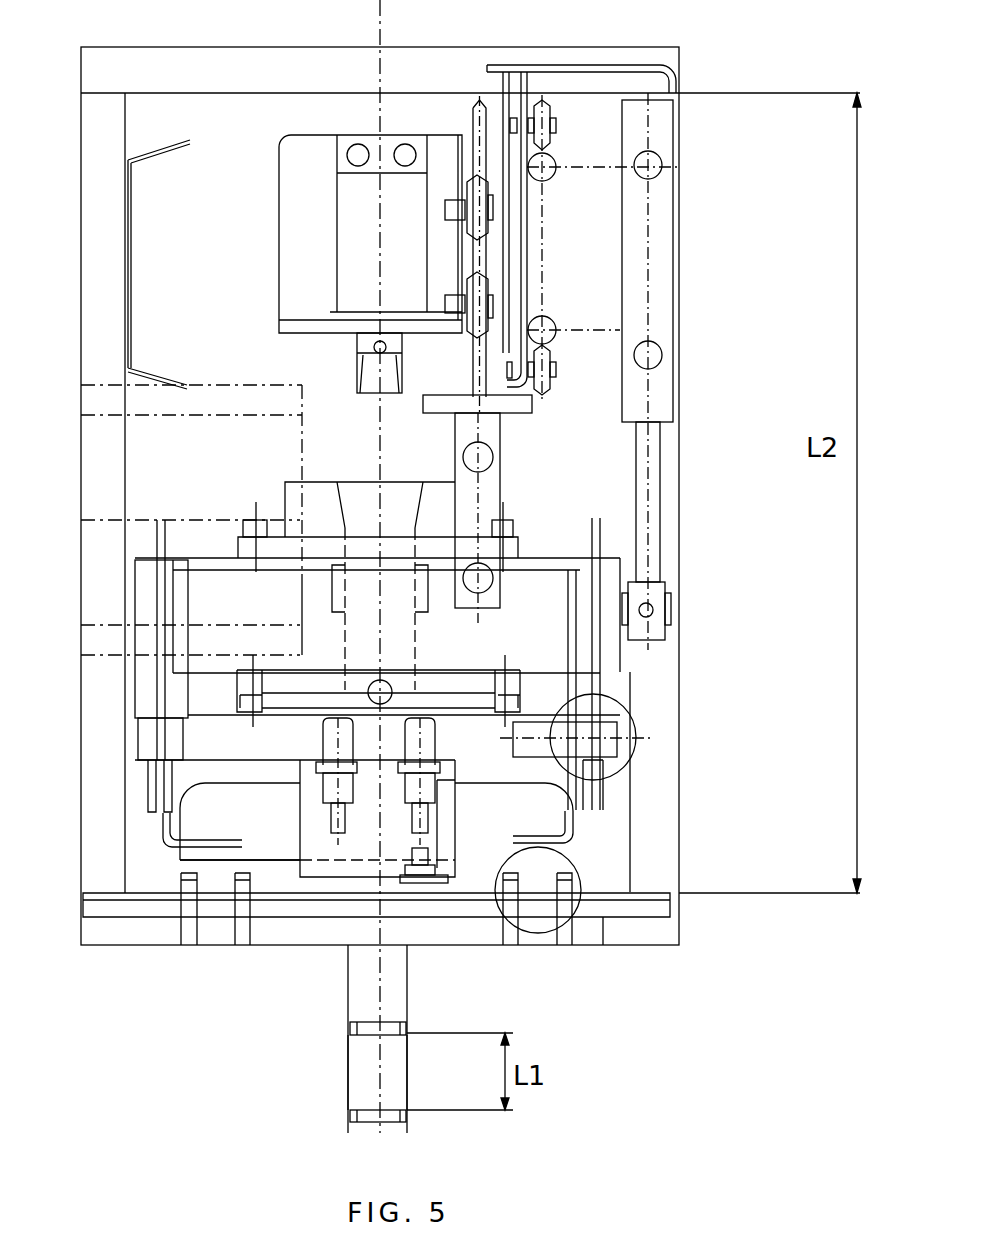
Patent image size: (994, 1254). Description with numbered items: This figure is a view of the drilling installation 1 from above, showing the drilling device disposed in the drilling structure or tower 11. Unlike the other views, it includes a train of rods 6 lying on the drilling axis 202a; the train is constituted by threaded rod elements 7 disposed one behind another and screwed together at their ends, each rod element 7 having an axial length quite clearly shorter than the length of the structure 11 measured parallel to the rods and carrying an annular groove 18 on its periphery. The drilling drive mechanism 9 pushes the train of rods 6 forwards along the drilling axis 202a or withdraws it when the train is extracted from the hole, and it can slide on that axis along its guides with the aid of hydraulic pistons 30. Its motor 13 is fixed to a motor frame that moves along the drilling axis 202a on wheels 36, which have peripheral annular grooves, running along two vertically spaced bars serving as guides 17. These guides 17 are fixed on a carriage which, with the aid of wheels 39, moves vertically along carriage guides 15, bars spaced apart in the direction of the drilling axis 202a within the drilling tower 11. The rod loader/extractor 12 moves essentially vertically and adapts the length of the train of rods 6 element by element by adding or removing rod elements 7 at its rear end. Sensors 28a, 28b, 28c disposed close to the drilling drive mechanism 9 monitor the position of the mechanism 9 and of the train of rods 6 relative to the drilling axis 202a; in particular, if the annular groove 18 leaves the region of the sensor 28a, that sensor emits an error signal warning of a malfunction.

The installation 1 is at (219, 960).
The train of rods 6 is at (349, 977).
The rod element 7 is at (360, 1093).
The drilling drive mechanism 9 is at (134, 689).
The drilling structure or tower 11 is at (285, 70).
The rod loader/extractor 12 is at (279, 204).
The motor 13 is at (357, 275).
The carriage guides 15 is at (545, 327).
The guides 17 is at (477, 107).
The annular groove 18 is at (387, 1115).
The sensor 28a is at (330, 815).
The sensor 28b is at (425, 876).
The sensor 28c is at (425, 822).
The hydraulic pistons 30 is at (667, 380).
The wheels 36 is at (477, 295).
The wheels 39 is at (542, 108).
The drilling axis 202a is at (378, 975).